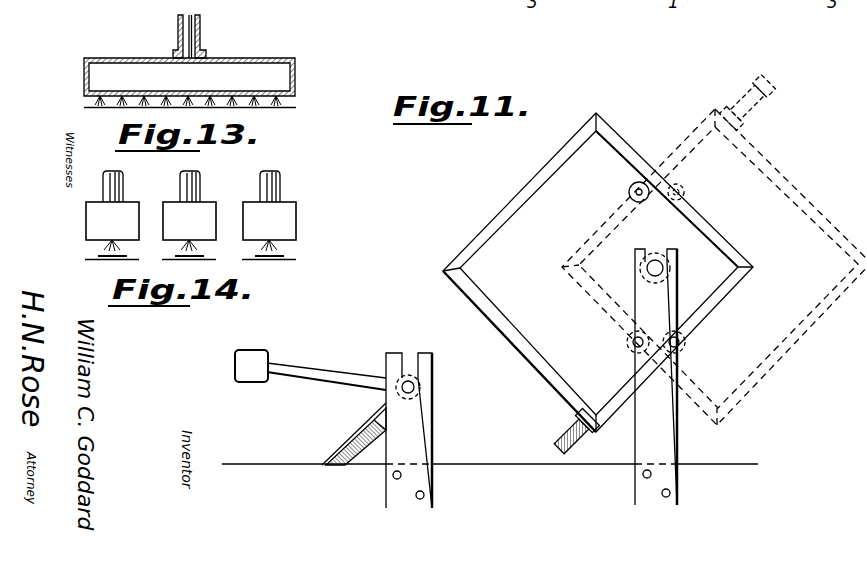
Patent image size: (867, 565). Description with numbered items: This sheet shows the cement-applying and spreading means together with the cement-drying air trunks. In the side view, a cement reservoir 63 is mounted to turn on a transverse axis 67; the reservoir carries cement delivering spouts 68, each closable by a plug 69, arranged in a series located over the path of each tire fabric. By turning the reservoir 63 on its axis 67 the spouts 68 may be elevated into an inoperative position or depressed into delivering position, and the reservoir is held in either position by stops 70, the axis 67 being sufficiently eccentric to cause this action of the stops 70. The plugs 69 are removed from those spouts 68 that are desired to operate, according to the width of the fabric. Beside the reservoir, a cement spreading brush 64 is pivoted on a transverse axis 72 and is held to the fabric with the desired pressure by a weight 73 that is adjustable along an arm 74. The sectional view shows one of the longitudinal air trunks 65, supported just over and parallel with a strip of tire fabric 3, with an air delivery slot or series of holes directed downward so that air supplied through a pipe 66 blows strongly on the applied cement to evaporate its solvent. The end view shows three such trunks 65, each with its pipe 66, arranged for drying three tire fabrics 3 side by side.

In FIG. 13, the floor / supporting surface 3 is at (291, 108).
In FIG. 14, the floor / supporting surface 3 is at (87, 260).
In FIG. 11, the cement reservoir 63 is at (508, 227).
In FIG. 11, the cement spreading brush 64 is at (347, 434).
In FIG. 13, the air trunk 65 is at (235, 58).
In FIG. 14, the air trunk 65 is at (285, 213).
In FIG. 13, the air supply pipe 66 is at (177, 27).
In FIG. 14, the air supply pipe 66 is at (103, 186).
In FIG. 11, the transverse axis 67 is at (663, 268).
In FIG. 11, the cement delivering spout 68 is at (570, 432).
In FIG. 11, the plug 69 is at (762, 78).
In FIG. 11, the stop 70 is at (629, 192).
In FIG. 11, the transverse axis 72 is at (415, 385).
In FIG. 11, the weight 73 is at (252, 350).
In FIG. 11, the arm 74 is at (327, 376).